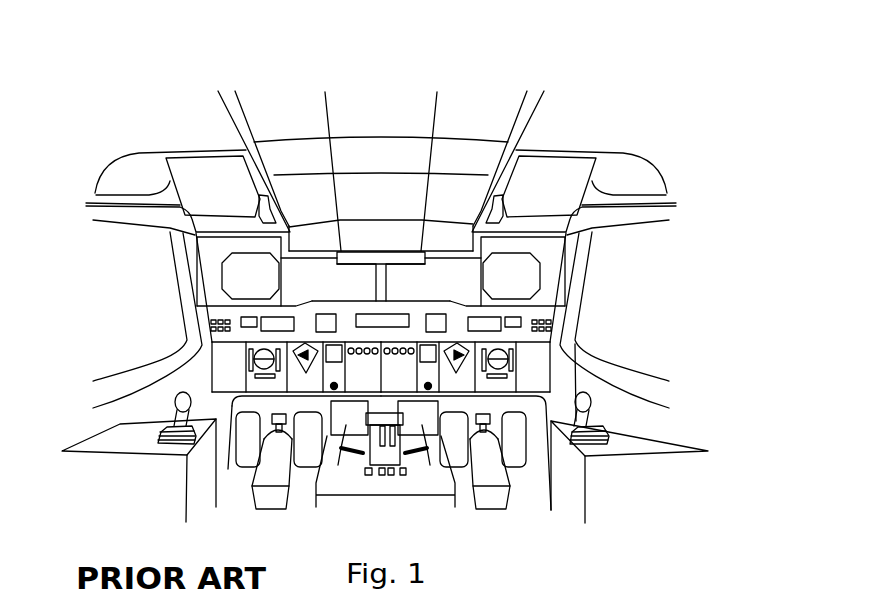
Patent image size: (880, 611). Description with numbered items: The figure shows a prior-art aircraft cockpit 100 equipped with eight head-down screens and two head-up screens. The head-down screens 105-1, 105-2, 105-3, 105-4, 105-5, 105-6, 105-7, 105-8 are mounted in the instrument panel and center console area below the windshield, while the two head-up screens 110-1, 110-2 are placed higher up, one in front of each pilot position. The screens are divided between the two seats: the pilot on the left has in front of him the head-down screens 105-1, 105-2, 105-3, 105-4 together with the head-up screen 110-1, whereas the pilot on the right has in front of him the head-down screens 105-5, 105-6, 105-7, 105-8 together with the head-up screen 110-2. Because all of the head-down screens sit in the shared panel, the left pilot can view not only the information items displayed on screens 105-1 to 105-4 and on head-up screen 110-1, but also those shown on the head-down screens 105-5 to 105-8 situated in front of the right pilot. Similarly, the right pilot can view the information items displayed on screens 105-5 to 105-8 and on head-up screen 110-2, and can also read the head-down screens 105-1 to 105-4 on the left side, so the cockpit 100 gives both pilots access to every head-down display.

The aircraft cockpit 100 is at (673, 130).
The head-up screen 110-1 is at (243, 280).
The head-up screen 110-2 is at (523, 280).
The head-down screen 105-1 is at (266, 352).
The head-down screen 105-2 is at (276, 381).
The head-down screen 105-3 is at (358, 365).
The head-down screen 105-4 is at (346, 456).
The head-down screen 105-5 is at (484, 380).
The head-down screen 105-6 is at (503, 352).
The head-down screen 105-7 is at (406, 365).
The head-down screen 105-8 is at (424, 456).